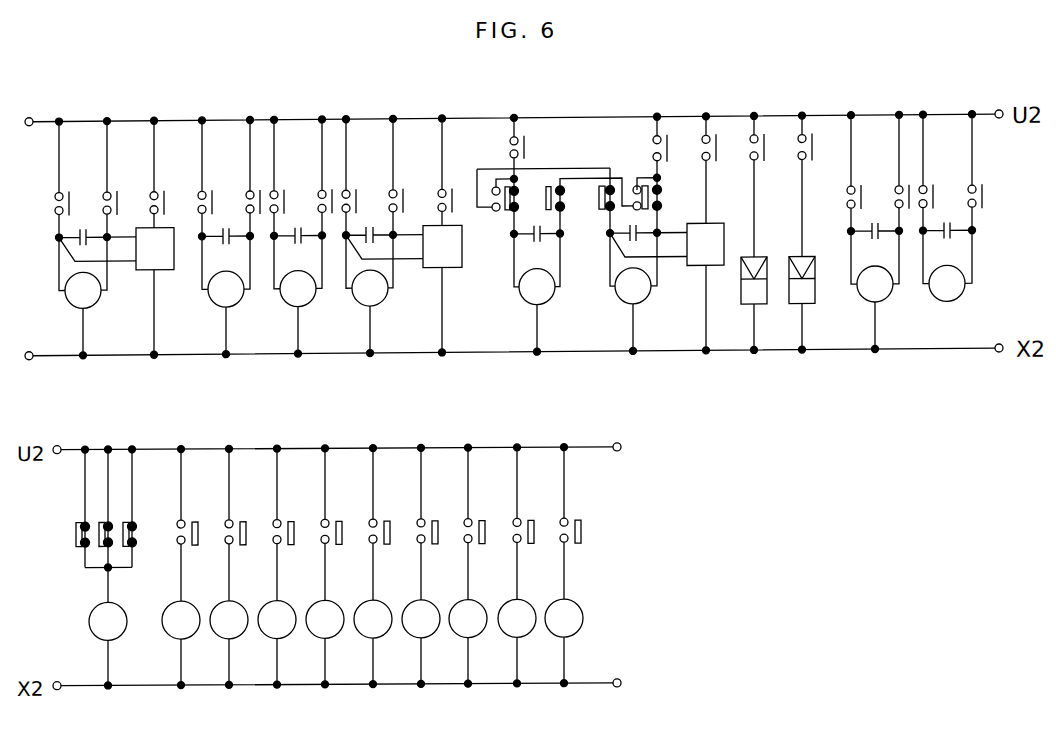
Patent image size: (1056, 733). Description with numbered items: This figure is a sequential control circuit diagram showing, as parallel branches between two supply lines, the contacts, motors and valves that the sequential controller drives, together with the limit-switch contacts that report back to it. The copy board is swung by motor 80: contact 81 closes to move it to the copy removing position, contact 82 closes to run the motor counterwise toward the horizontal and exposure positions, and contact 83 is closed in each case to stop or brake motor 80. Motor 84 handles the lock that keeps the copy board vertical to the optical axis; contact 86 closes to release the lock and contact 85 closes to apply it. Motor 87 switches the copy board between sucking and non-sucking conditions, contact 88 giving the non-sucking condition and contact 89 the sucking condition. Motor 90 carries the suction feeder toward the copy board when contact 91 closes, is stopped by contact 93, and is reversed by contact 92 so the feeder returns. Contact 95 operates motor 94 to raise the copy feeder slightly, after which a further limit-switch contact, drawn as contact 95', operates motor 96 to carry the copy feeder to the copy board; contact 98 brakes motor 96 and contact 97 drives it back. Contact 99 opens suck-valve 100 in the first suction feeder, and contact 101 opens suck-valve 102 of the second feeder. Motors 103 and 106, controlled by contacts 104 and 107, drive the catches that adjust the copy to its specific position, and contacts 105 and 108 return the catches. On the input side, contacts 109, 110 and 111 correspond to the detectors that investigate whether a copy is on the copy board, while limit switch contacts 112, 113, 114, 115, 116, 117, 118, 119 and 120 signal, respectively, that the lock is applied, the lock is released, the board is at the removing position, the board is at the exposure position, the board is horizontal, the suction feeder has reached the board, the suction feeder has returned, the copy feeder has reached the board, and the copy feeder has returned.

The motor 80 is at (73, 310).
The contact 81 is at (65, 192).
The contact 82 is at (112, 192).
The contact 83 is at (160, 192).
The motor 84 is at (216, 310).
The contact 85 is at (208, 192).
The contact 86 is at (255, 192).
The motor 87 is at (288, 310).
The contact 88 is at (280, 192).
The contact 89 is at (327, 192).
The motor 90 is at (360, 310).
The contact 91 is at (352, 192).
The contact 92 is at (398, 192).
The contact 93 is at (447, 192).
The motor 94 is at (526, 310).
The contact 95 is at (537, 146).
The limit switch 95' is at (543, 212).
The motor 96 is at (622, 310).
The contact 97 is at (662, 144).
The contact 98 is at (711, 144).
The contact 99 is at (759, 144).
The suck-valve 100 is at (740, 311).
The contact 101 is at (807, 144).
The suck-valve 102 is at (788, 311).
The motor 103 is at (865, 310).
The contact 104 is at (856, 192).
The contact 105 is at (904, 192).
The motor 106 is at (939, 310).
The contact 107 is at (929, 192).
The contact 108 is at (978, 192).
The contact 109 is at (74, 538).
The contact 110 is at (112, 520).
The contact 111 is at (135, 533).
The contact 112 is at (185, 521).
The limit switch 113 is at (233, 521).
The limit switch 114 is at (281, 521).
The contact 115 is at (329, 521).
The contact 116 is at (377, 521).
The contact 117 is at (425, 521).
The contact 118 is at (473, 521).
The contact 119 is at (521, 521).
The contact 120 is at (569, 521).